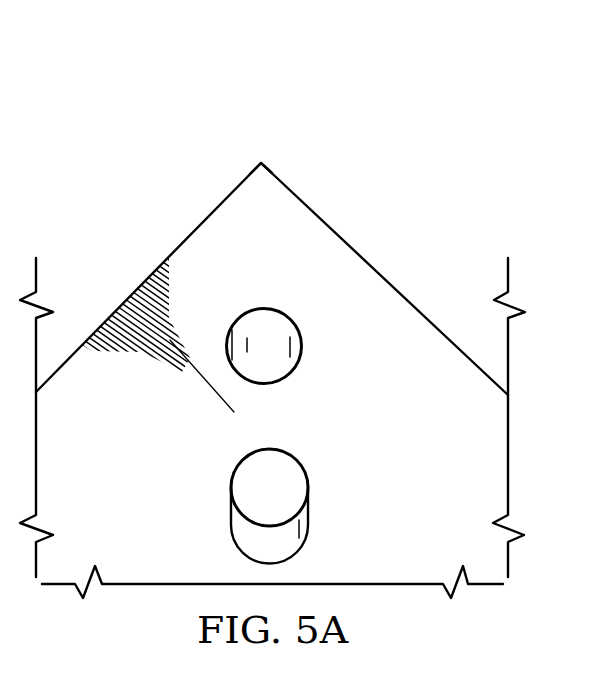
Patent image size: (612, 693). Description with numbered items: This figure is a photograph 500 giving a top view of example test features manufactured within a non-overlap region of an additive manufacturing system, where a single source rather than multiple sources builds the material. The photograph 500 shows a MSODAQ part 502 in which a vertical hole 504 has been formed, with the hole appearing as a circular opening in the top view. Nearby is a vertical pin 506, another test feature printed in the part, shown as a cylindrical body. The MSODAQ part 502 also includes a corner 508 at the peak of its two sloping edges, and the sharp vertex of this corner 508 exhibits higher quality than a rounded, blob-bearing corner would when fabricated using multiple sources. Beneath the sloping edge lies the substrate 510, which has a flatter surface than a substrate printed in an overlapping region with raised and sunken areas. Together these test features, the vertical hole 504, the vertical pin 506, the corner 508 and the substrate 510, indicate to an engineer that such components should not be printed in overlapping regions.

The photograph 500 is at (110, 87).
The MSODAQ part 502 is at (397, 198).
The vertical hole 504 is at (266, 317).
The vertical pin 506 is at (310, 502).
The corner 508 is at (255, 154).
The substrate 510 is at (223, 230).